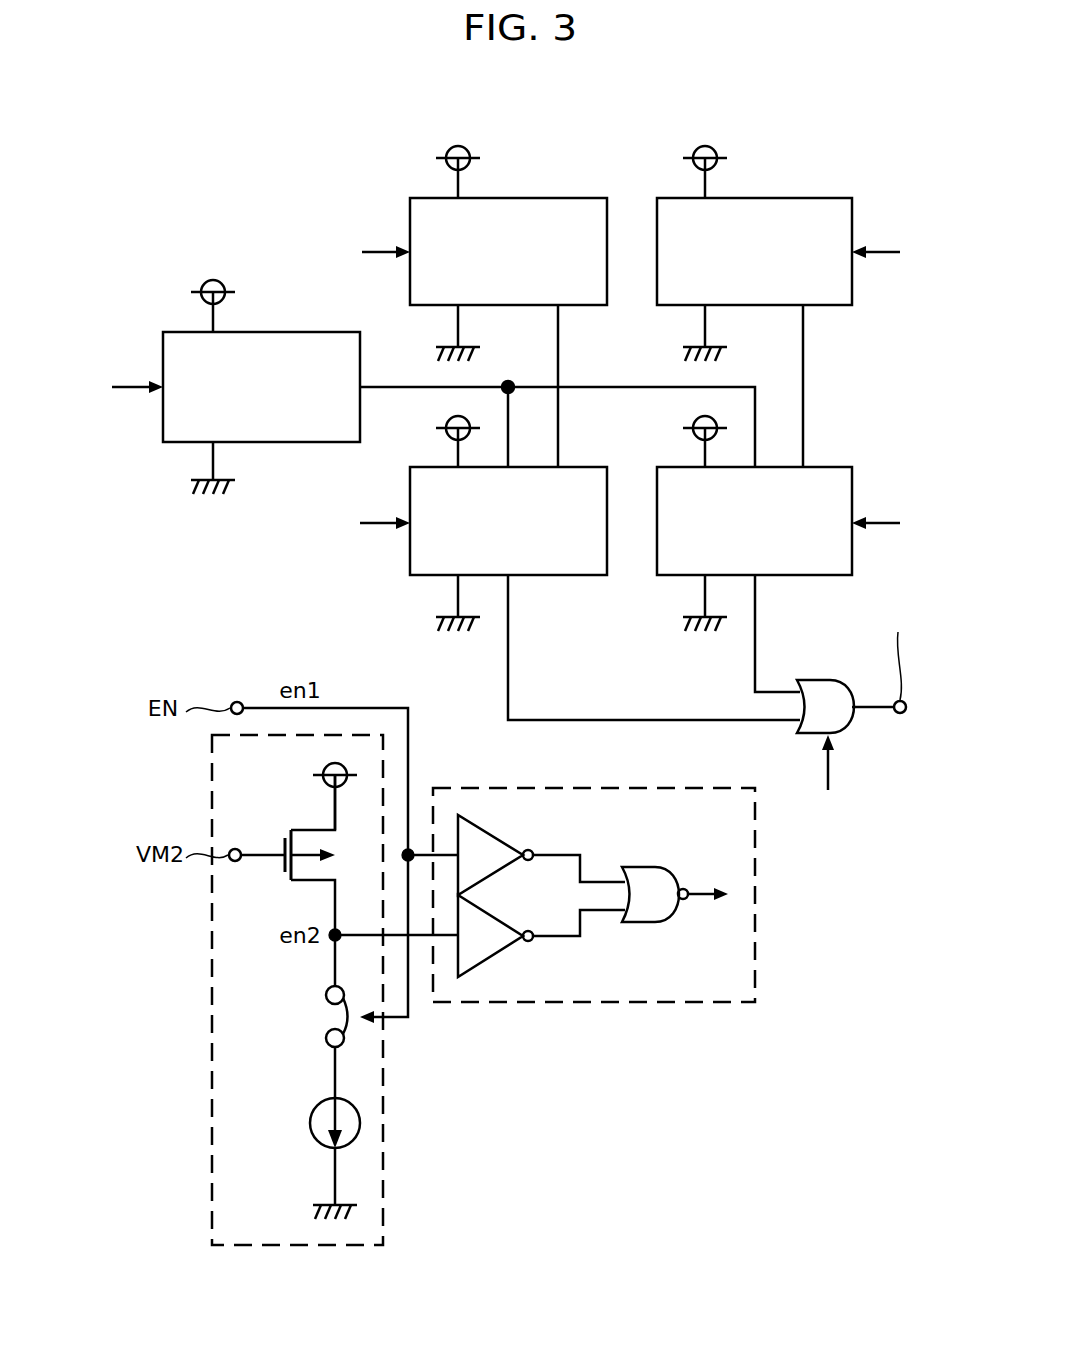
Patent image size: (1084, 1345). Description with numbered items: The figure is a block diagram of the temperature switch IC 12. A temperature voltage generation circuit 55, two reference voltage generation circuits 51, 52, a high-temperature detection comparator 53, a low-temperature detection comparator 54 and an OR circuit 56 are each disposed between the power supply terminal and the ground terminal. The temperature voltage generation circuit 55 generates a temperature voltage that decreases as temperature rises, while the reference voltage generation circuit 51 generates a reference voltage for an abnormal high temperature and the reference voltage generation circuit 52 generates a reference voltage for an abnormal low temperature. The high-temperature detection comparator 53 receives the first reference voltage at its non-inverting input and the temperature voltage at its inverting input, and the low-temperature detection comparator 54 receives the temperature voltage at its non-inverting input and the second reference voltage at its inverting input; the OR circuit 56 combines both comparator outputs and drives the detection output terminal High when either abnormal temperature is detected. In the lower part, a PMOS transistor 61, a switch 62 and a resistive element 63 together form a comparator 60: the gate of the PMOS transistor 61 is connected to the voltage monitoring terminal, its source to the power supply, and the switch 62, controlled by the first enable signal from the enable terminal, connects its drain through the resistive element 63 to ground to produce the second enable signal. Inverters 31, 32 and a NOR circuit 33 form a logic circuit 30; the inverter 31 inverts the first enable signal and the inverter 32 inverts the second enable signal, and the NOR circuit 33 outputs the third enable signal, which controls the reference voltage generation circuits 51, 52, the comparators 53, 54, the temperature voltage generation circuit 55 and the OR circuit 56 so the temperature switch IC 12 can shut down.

The temperature switch IC 12 is at (630, 148).
The logic circuit 30 is at (512, 788).
The inverter 31 is at (514, 840).
The inverter 32 is at (502, 952).
The NOR circuit 33 is at (660, 867).
The reference voltage generation circuit 51 is at (556, 198).
The reference voltage generation circuit 52 is at (803, 198).
The high-temperature detection comparator 53 is at (580, 467).
The low-temperature detection comparator 54 is at (828, 467).
The temperature voltage generation circuit 55 is at (330, 332).
The OR circuit 56 is at (827, 680).
The comparator 60 is at (212, 1017).
The PMOS transistor 61 is at (283, 838).
The switch 62 is at (312, 1017).
The resistive element 63 is at (310, 1123).